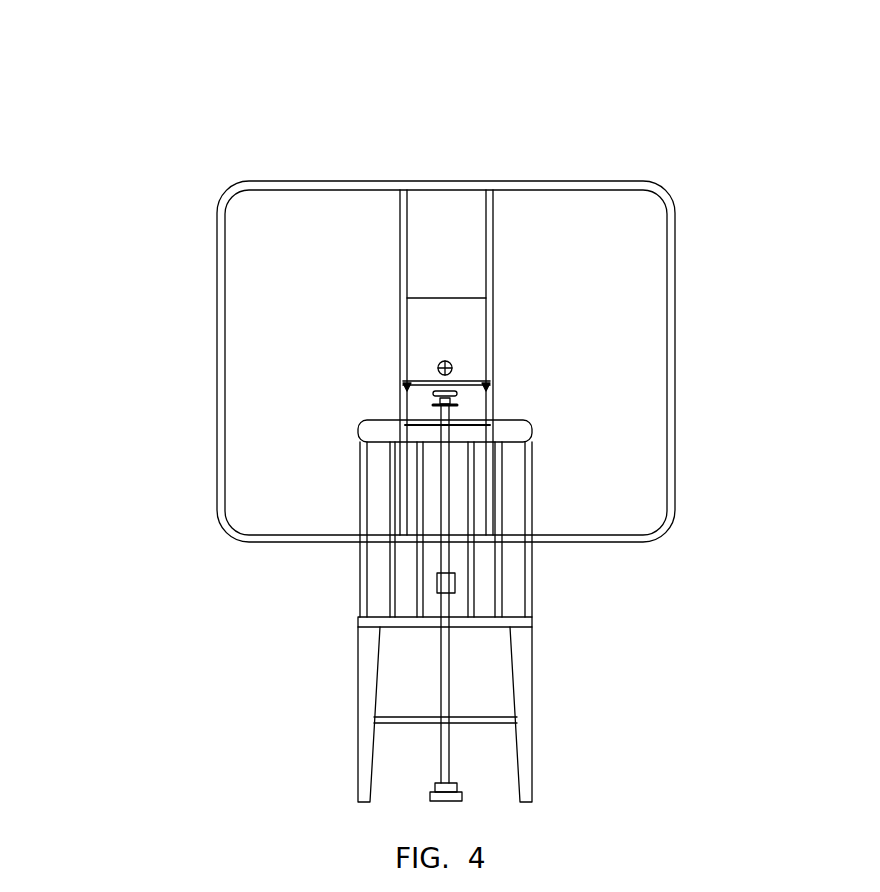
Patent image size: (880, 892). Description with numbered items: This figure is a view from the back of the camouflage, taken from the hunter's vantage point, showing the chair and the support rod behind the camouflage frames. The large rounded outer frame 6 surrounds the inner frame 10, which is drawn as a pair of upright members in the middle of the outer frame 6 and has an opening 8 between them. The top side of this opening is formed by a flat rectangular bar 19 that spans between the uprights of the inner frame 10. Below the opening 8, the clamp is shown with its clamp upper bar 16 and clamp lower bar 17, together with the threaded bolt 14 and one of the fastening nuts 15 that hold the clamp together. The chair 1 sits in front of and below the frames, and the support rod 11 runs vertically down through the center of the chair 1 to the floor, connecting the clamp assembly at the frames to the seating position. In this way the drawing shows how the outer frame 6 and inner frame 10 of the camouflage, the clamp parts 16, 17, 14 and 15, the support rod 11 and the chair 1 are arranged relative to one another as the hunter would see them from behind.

The chair 1 is at (358, 433).
The outer frame 6 is at (453, 181).
The opening 8 is at (450, 362).
The inner frame 10 is at (402, 215).
The support rod 11 is at (443, 668).
The threaded bolt 14 is at (483, 392).
The fastening nut 15 is at (490, 381).
The clamp upper bar 16 is at (414, 376).
The clamp lower bar 17 is at (421, 392).
The flat rectangular bar 19 is at (432, 298).